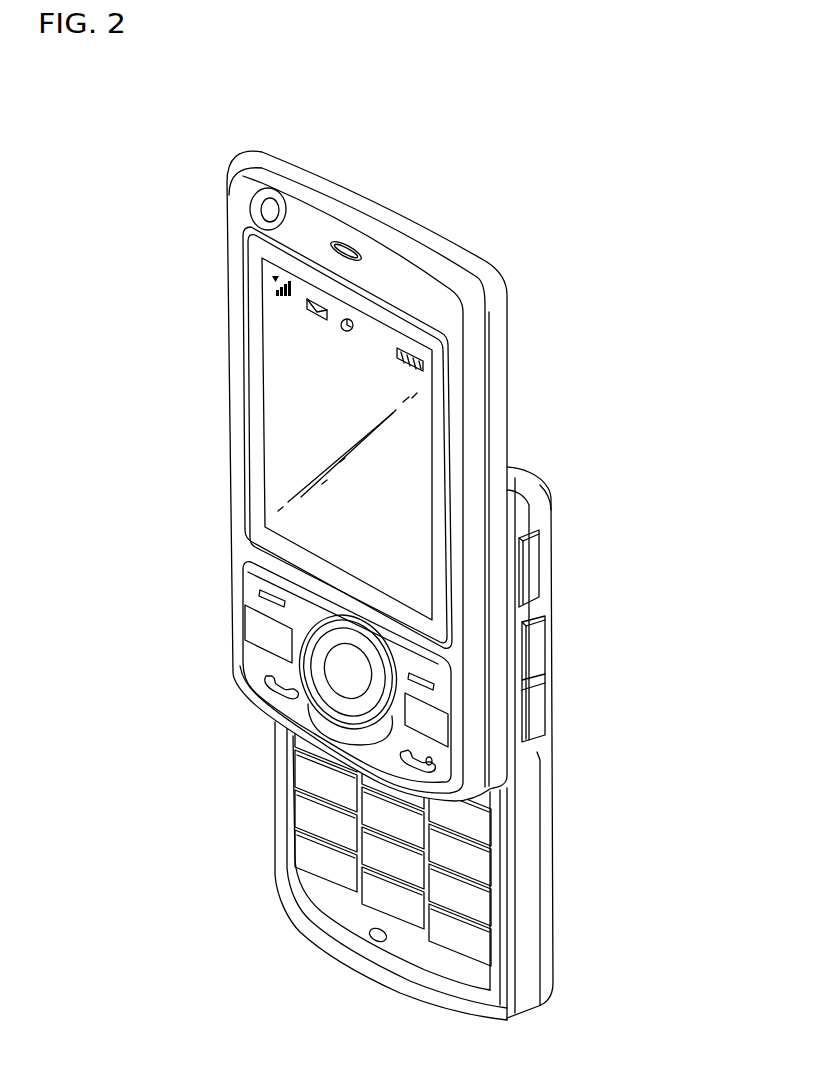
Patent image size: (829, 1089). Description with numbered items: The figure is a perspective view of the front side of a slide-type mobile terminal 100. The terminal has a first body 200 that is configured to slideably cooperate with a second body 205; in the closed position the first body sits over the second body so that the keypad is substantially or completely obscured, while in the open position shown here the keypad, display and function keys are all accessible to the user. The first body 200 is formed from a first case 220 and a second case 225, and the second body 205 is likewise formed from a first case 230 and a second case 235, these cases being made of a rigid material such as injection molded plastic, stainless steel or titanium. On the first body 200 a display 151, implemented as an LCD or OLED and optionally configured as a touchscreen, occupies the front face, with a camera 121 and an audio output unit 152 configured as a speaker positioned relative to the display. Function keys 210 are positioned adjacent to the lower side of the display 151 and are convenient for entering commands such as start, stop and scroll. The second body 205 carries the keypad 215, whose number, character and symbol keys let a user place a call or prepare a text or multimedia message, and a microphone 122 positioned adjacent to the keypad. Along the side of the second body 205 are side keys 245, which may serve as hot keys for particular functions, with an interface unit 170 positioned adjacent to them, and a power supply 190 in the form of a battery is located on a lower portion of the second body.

The mobile terminal 100 is at (533, 172).
The camera 121 is at (270, 208).
The microphone 122 is at (377, 941).
The display 151 is at (277, 385).
The audio output unit 152 is at (345, 248).
The interface unit 170 is at (533, 563).
The power supply 190 is at (548, 855).
The first body 200 is at (196, 290).
The second body 205 is at (262, 792).
The function keys 210 is at (258, 628).
The keypad 215 is at (305, 847).
The first case 220 is at (477, 374).
The second case 225 is at (497, 331).
The first case 230 is at (517, 505).
The second case 235 is at (542, 528).
The side keys 245 is at (538, 708).